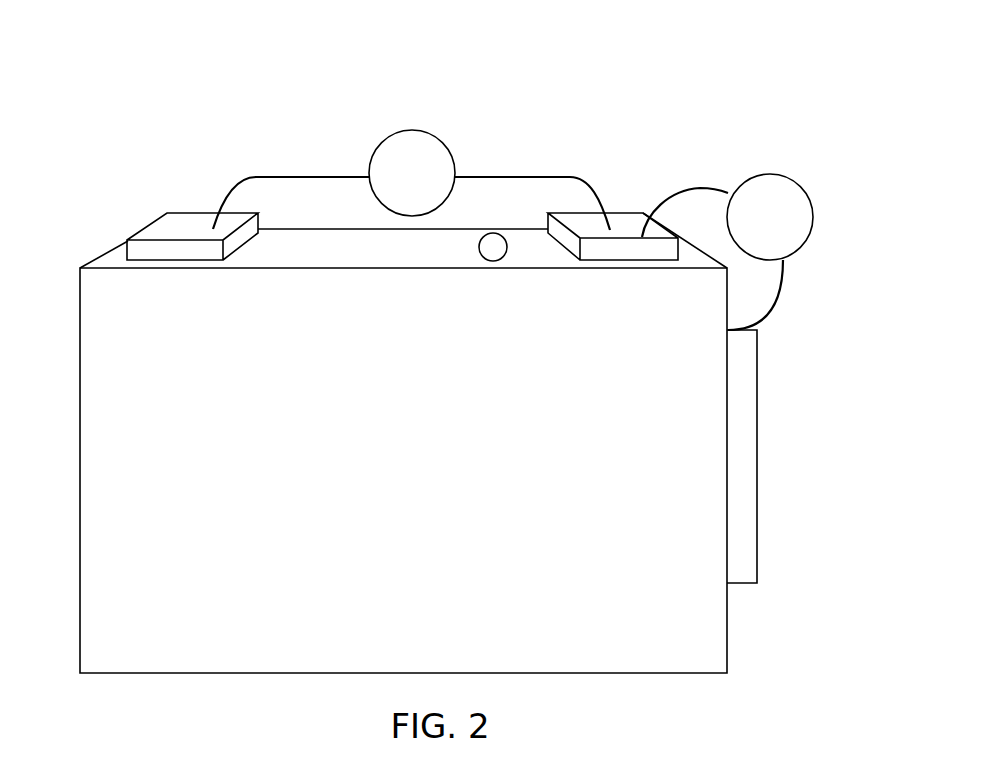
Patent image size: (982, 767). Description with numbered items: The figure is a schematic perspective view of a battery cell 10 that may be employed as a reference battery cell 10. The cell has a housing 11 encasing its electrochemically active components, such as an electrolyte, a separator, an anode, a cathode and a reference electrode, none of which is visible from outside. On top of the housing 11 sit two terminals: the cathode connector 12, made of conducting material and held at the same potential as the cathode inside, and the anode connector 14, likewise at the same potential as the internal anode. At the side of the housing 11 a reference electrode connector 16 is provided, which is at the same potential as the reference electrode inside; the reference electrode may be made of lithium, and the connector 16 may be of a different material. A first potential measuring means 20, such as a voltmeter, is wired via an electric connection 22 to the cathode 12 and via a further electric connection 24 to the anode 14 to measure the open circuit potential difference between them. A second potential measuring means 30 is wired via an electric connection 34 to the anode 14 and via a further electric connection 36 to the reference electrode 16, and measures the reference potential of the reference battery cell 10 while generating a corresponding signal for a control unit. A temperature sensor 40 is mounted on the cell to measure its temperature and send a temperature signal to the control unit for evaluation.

The reference battery cell 10 is at (365, 443).
The housing 11 is at (80, 360).
The cathode connector 12 is at (188, 212).
The anode connector 14 is at (618, 213).
The reference electrode connector 16 is at (757, 458).
The first potential measuring means 20 is at (412, 130).
The electric connection 22 is at (313, 175).
The further electric connection 24 is at (528, 176).
The second potential measuring means 30 is at (813, 228).
The electric connection 34 is at (692, 186).
The further electric connection 36 is at (775, 303).
The temperature sensor 40 is at (490, 233).